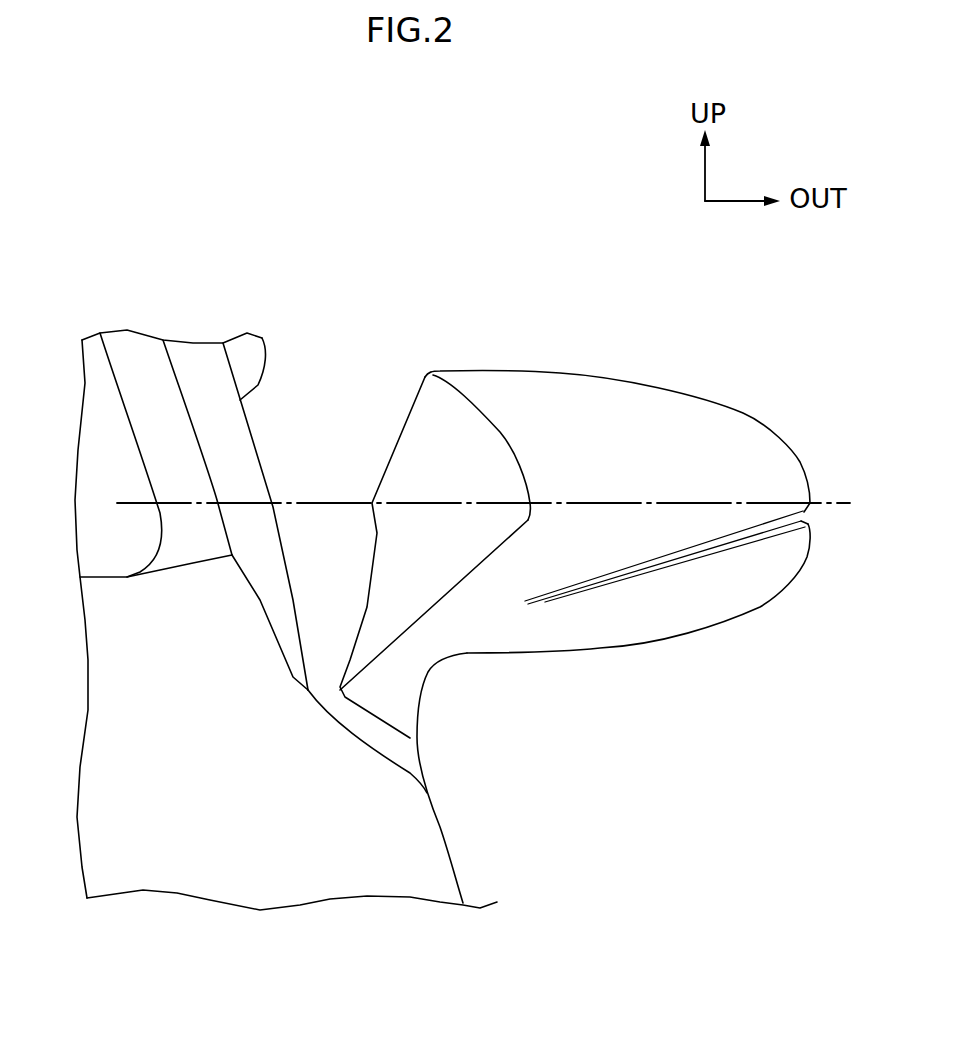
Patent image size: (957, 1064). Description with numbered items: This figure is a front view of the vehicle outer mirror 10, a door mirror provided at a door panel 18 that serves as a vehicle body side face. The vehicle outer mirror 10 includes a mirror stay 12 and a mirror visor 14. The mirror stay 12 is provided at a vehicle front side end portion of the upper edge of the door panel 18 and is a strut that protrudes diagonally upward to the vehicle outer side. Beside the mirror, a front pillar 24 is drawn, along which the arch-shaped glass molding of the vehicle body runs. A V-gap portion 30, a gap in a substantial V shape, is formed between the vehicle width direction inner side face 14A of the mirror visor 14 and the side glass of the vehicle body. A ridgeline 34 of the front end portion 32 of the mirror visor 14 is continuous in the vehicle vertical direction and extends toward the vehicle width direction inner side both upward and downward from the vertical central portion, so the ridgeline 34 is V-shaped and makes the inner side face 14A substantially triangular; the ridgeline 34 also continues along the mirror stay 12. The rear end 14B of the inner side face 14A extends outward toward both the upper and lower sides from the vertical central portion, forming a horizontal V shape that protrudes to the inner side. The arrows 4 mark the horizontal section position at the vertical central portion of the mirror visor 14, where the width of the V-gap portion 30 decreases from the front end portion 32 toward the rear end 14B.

The section arrows 4- 4 is at (128, 493).
The vehicle outer mirror 10 is at (497, 266).
The mirror stay 12 is at (423, 698).
The mirror visor 14 is at (625, 371).
The vehicle width direction inner side face 14A is at (478, 411).
The rear end 14B is at (466, 557).
The door panel 18 is at (410, 755).
The front pillar 24 is at (265, 335).
The V-gap portion 30 is at (338, 377).
The front end portion 32 is at (530, 503).
The ridgeline 34 is at (500, 432).